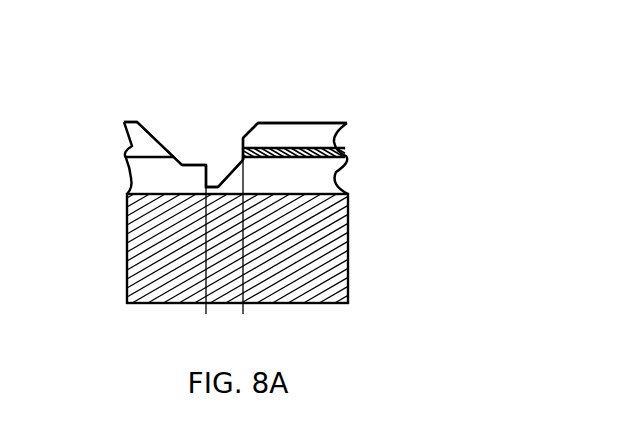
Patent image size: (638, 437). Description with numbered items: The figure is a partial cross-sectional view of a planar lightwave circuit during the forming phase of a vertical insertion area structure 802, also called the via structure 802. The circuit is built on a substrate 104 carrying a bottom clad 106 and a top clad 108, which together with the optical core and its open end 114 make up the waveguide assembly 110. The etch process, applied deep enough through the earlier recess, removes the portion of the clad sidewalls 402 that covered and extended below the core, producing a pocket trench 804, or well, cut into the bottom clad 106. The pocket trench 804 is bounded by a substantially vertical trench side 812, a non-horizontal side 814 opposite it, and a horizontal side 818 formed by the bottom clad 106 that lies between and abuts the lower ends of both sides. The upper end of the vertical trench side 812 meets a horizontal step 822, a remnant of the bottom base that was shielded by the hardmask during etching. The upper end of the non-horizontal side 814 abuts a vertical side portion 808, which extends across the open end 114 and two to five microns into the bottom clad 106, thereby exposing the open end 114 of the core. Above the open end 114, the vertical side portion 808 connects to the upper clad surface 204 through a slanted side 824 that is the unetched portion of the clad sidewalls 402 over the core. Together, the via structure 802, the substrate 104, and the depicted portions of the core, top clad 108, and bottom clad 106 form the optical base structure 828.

The vertical insertion area structure 802 is at (190, 68).
The horizontal step 822 is at (182, 163).
The vertical trench side 812 is at (207, 163).
The clad sidewalls 402 is at (124, 121).
The horizontal side 818 is at (213, 164).
The non-horizontal side 814 is at (231, 171).
The open end 114 is at (235, 168).
The vertical side portion 808 is at (239, 166).
The slanted side 824 is at (243, 148).
The upper clad surface 204 is at (343, 118).
The top clad 108 is at (276, 143).
The bottom clad 106 is at (265, 183).
The waveguide assembly 110 is at (107, 134).
The optical base structure 828 is at (358, 123).
The substrate 104 is at (121, 281).
The pocket trench 804 is at (243, 313).